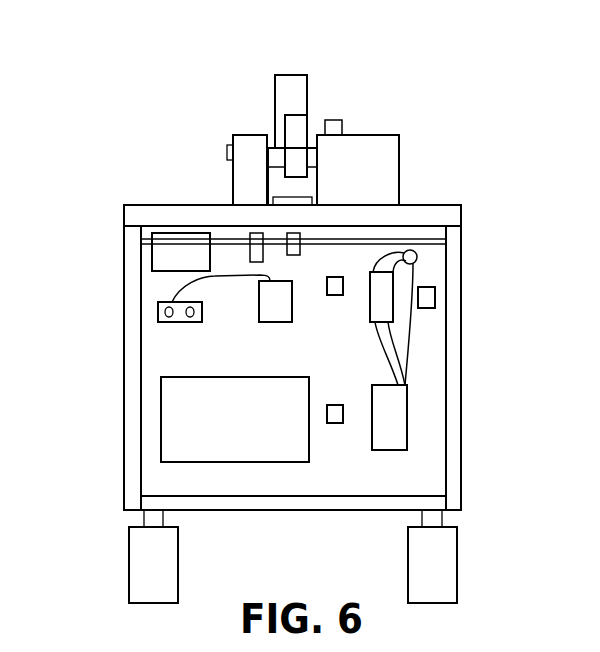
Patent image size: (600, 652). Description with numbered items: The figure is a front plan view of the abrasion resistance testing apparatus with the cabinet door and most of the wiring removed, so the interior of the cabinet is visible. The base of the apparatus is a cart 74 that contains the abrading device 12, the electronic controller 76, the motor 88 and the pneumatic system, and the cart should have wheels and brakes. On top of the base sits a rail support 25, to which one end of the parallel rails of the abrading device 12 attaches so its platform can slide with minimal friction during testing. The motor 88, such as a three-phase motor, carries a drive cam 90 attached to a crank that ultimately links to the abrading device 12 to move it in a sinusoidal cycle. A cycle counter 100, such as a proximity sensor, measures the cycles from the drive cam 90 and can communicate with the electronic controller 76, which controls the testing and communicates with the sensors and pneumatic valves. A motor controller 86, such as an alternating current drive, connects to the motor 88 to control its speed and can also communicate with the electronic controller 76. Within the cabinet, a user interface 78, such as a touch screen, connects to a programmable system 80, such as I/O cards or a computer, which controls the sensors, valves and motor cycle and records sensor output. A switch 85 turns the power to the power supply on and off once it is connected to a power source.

The abrading device 12 is at (295, 85).
The rail support 25 is at (248, 145).
The cart 74 is at (455, 498).
The electronic controller 76 is at (177, 407).
The user interface 78 is at (167, 260).
The programmable system 80 is at (193, 443).
The switch 85 is at (433, 300).
The motor controller 86 is at (398, 422).
The motor 88 is at (382, 175).
The drive cam 90 is at (300, 132).
The cycle counter 100 is at (335, 127).